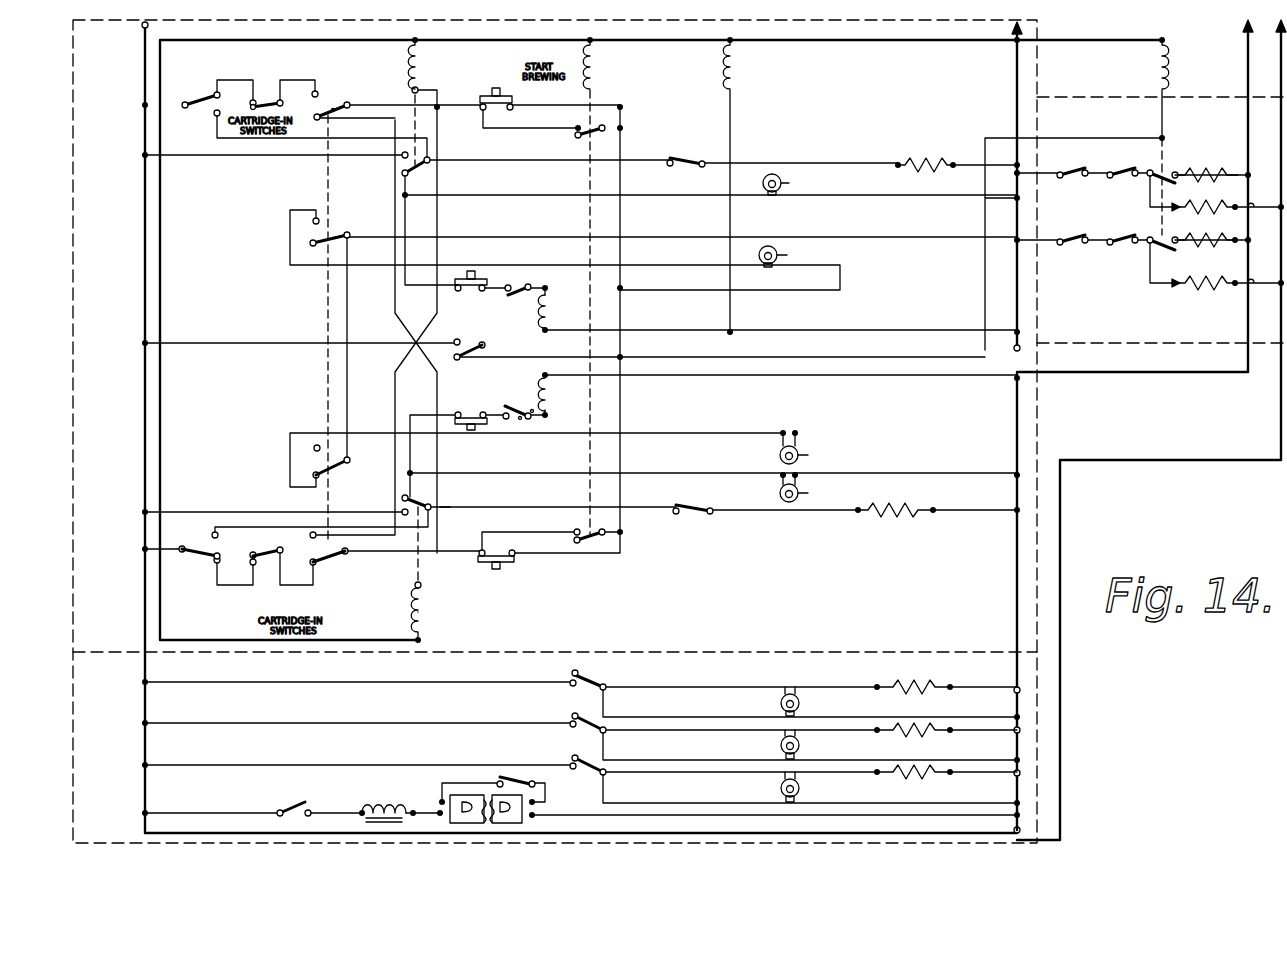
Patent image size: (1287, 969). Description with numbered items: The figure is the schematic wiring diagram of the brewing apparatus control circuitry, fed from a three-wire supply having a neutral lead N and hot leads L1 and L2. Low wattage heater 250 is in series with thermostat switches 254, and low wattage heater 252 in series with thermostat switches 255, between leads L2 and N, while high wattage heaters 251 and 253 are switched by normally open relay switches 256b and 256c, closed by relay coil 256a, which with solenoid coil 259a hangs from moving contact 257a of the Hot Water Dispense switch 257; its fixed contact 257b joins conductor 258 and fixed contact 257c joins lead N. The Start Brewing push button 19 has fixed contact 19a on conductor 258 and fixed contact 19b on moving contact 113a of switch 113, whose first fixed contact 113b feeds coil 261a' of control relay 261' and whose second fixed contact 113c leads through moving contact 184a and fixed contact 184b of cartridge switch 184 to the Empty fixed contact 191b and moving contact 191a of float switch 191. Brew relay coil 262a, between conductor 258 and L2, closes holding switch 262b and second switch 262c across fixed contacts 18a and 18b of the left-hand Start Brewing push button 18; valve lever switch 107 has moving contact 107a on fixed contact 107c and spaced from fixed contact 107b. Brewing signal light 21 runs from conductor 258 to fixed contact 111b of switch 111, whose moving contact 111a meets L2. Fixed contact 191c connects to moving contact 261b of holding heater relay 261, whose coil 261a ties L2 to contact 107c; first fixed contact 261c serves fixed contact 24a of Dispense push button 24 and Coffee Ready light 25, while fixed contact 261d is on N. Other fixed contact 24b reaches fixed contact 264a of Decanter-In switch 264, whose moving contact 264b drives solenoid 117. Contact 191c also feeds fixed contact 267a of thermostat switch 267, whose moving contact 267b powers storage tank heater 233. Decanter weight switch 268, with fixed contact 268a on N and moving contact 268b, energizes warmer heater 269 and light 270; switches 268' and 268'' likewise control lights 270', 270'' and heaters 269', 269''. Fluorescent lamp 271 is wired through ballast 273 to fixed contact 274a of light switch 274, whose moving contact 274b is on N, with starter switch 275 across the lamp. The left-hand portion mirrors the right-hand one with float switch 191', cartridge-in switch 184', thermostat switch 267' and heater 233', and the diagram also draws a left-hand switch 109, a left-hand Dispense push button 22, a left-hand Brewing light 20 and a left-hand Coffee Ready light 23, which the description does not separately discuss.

The neutral lead N is at (1276, 70).
The hot lead L1 is at (1246, 70).
The hot lead L2 is at (645, 46).
The float switch 191' is at (217, 84).
The cartridge-in switch 184' is at (282, 81).
The second valve lever switch 107 is at (338, 104).
The moving contact 107a is at (330, 108).
The fixed contact 107b is at (316, 90).
The fixed contact 107c is at (318, 120).
The control relay 261' is at (400, 92).
The relay coil 261a' is at (446, 64).
The switch 109 is at (335, 232).
The Start Brewing push button 18 is at (496, 92).
The fixed contact 18a is at (480, 104).
The fixed contact 18b is at (512, 107).
The brew relay coil 262a is at (620, 60).
The second switch 262c is at (603, 128).
The conductor 258 is at (620, 140).
The solenoid coil 259a is at (738, 72).
The thermostat switch 267' is at (694, 147).
The storage tank heater 233' is at (925, 145).
The coffee ready lamp 23 is at (800, 184).
The brewing lamp 20 is at (790, 256).
The dispense push button 22 is at (486, 275).
The Hot Water Dispense switch 257 is at (482, 320).
The moving contact 257a is at (482, 344).
The fixed contact 257b is at (476, 360).
The fixed contact 257c is at (462, 332).
The Dispense push button switch 24 is at (482, 452).
The fixed contact 24a is at (454, 414).
The fixed contact 24b is at (479, 403).
The Decanter-In switch 264 is at (517, 401).
The fixed contact 264a is at (523, 420).
The moving contact 264b is at (532, 410).
The solenoid 117 is at (546, 392).
The switch 111 is at (303, 440).
The moving contact 111a is at (300, 465).
The fixed contact 111b is at (330, 476).
The fixed contact 261d is at (408, 512).
The first fixed contact 261c is at (420, 499).
The moving contact 261b is at (441, 505).
The fixed contact 191c is at (215, 534).
The moving contact 191a is at (184, 552).
The Empty fixed contact 191b is at (218, 564).
The float switch 191 is at (198, 595).
The moving contact 184a is at (256, 548).
The fixed contact 184b is at (252, 564).
The cartridge switch 184 is at (278, 582).
The first fixed contact 113b is at (312, 532).
The second fixed contact 113c is at (312, 564).
The moving contact 113a is at (330, 564).
The switch 113 is at (341, 579).
The holding heater relay 261 is at (385, 611).
The relay coil 261a is at (459, 625).
The Start Brewing push button 19 is at (512, 570).
The fixed contact 19a is at (516, 556).
The fixed contact 19b is at (480, 556).
The first normally open switch 262b is at (589, 540).
The Brewing signal light 21 is at (776, 458).
The Coffee Ready light 25 is at (778, 497).
The thermostat switch 267 is at (708, 494).
The fixed contact 267a is at (676, 514).
The moving contact 267b is at (710, 514).
The storage tank heater 233 is at (895, 530).
The relay coil 256a is at (1168, 60).
The relay switch 256b is at (1145, 166).
The relay switch 256c is at (1150, 260).
The thermostat switches 254 is at (1100, 166).
The thermostat switches 255 is at (1110, 244).
The high wattage heater 251 is at (1202, 168).
The low wattage heater 250 is at (1198, 212).
The high wattage heater 253 is at (1198, 244).
The low wattage heater 252 is at (1211, 288).
The decanter weight switch 268 is at (624, 674).
The fixed contact 268a is at (570, 686).
The moving contact 268b is at (571, 675).
The switch 268' is at (557, 735).
The switch 268'' is at (578, 783).
The decanter warmer light 270 is at (816, 701).
The signal light 270' is at (817, 744).
The signal light 270'' is at (819, 787).
The decanter warmer heater 269 is at (924, 675).
The decanter warmer heater 269' is at (932, 740).
The decanter warmer heater 269'' is at (934, 784).
The light switch 274 is at (294, 789).
The fixed contact 274a is at (312, 810).
The moving contact 274b is at (278, 806).
The ballast 273 is at (396, 803).
The fluorescent lamp 271 is at (460, 794).
The starter switch 275 is at (512, 776).